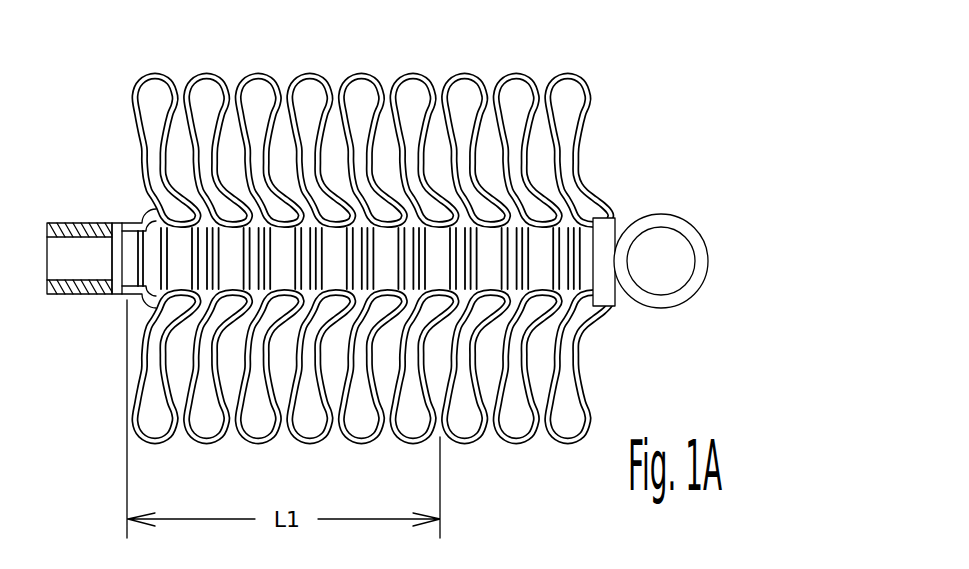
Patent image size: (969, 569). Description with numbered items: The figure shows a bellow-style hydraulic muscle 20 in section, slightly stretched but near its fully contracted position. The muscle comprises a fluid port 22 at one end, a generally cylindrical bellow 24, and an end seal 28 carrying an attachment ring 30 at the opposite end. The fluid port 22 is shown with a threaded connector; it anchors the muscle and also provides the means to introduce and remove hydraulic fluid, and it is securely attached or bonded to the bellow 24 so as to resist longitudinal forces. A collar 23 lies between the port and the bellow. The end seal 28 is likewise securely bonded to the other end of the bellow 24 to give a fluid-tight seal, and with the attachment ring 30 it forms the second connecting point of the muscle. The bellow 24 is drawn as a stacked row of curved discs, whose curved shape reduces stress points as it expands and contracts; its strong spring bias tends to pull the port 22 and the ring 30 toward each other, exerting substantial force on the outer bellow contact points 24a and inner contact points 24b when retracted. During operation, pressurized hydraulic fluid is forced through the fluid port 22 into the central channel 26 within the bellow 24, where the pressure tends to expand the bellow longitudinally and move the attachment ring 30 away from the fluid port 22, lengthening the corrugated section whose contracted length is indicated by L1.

The hydraulic muscle 20 is at (672, 125).
The fluid port 22 is at (94, 222).
The collar 23 is at (122, 298).
The bellow 24 is at (574, 74).
The outer bellow contact points 24a is at (232, 90).
The inner contact points 24b is at (205, 210).
The central channel 26 is at (538, 252).
The end seal 28 is at (610, 308).
The attachment ring 30 is at (698, 290).